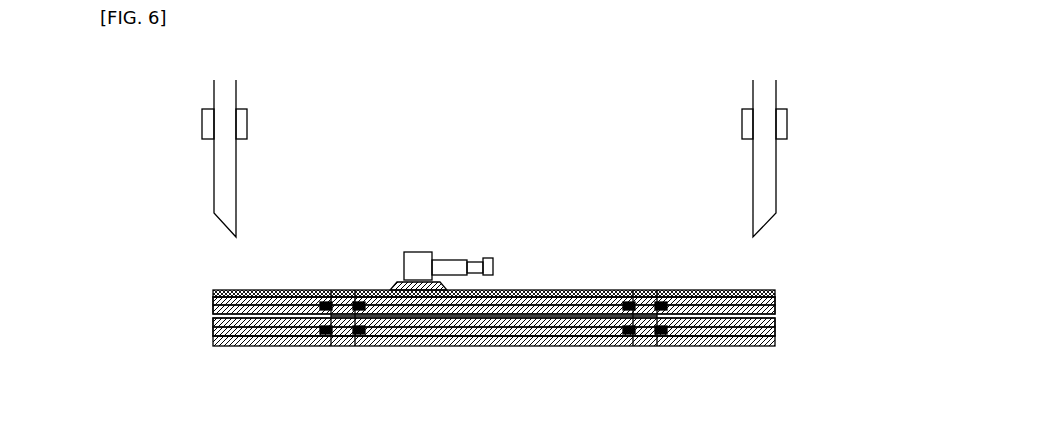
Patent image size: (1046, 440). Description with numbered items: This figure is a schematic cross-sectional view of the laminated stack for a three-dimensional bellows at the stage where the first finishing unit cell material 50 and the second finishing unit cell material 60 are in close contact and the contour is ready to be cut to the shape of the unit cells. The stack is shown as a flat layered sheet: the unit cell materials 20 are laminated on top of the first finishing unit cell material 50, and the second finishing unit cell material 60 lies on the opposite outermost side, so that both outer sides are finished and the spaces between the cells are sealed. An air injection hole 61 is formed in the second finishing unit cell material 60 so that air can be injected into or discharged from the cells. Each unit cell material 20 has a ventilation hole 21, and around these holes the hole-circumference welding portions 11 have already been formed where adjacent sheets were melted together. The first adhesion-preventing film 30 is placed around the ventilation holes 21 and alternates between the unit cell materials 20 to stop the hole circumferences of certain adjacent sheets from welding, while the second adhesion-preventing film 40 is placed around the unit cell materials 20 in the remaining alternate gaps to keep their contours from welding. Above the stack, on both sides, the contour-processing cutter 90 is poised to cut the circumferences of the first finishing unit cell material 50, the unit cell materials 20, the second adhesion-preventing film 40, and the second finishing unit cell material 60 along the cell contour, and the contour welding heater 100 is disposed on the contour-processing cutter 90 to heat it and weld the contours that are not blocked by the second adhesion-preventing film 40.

The contour welding heater 100 is at (202, 118).
The contour-processing cutter 90 is at (214, 190).
The air injection hole 61 is at (493, 265).
The second finishing unit cell material 60 is at (748, 289).
The unit cell material 20 is at (776, 298).
The second adhesion-preventing film 40 is at (782, 304).
The first finishing unit cell material 50 is at (760, 347).
The ventilation hole 21 is at (336, 290).
The hole-circumference welding portion 11 is at (358, 290).
The first adhesion-preventing film 30 is at (372, 347).